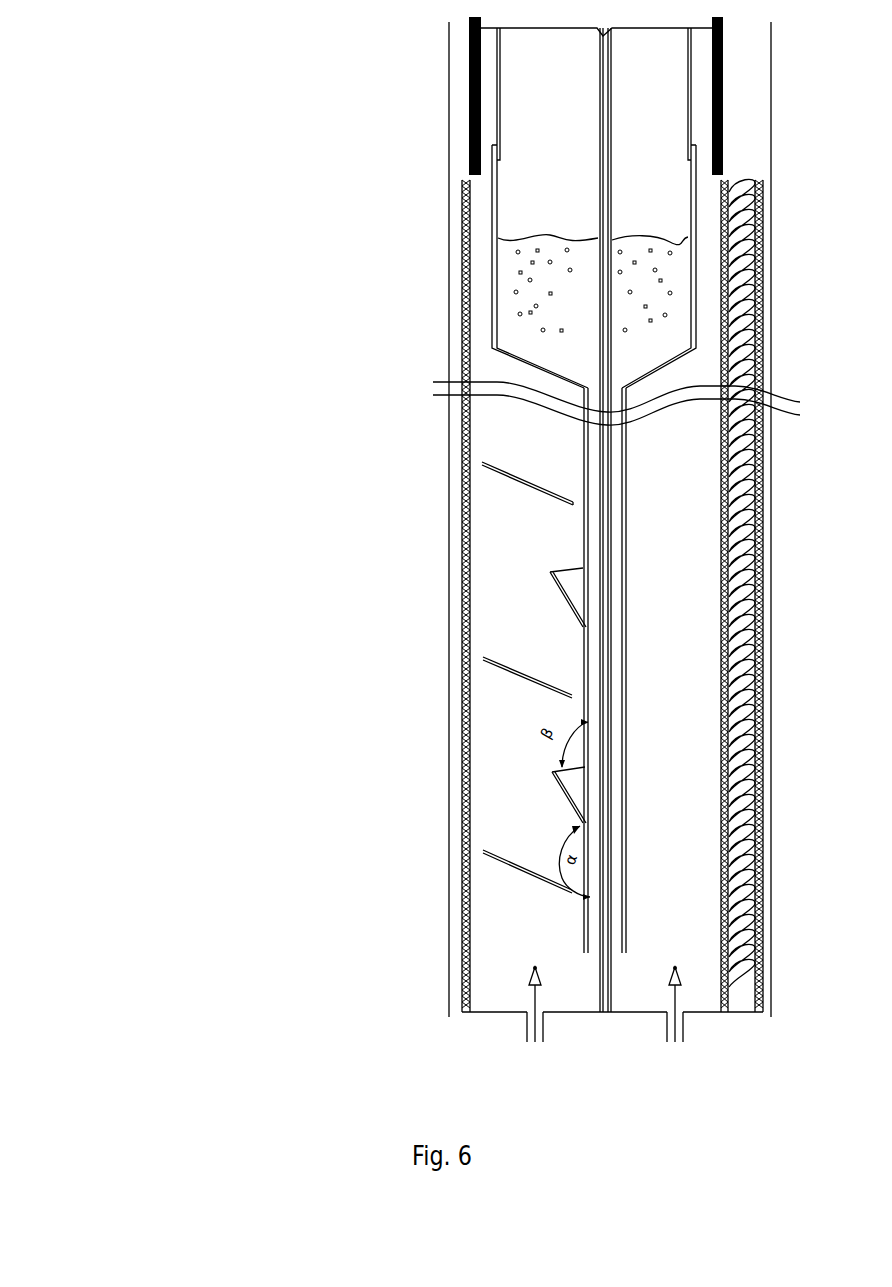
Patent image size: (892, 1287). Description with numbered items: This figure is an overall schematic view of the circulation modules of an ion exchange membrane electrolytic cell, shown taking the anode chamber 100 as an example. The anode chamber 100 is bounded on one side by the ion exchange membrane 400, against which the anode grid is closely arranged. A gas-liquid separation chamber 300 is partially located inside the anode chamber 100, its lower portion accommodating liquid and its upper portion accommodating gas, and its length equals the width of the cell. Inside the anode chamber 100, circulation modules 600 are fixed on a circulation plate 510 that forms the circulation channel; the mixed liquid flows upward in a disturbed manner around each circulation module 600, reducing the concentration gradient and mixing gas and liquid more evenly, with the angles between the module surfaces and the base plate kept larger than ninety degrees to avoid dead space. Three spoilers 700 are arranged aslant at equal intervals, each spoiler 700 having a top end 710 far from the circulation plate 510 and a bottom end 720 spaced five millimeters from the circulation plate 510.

The anode chamber 100 is at (515, 895).
The gas-liquid separation chamber 300 is at (548, 185).
The ion exchange membrane 400 is at (450, 375).
The circulation plate 510 is at (585, 910).
The circulation module 600 is at (552, 772).
The spoiler 700 is at (203, 375).
The top end 710 is at (482, 462).
The bottom end 720 is at (573, 502).